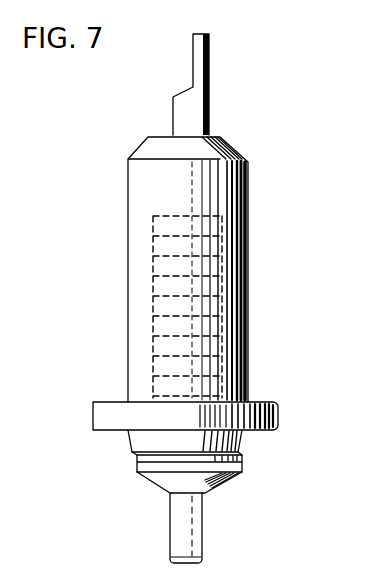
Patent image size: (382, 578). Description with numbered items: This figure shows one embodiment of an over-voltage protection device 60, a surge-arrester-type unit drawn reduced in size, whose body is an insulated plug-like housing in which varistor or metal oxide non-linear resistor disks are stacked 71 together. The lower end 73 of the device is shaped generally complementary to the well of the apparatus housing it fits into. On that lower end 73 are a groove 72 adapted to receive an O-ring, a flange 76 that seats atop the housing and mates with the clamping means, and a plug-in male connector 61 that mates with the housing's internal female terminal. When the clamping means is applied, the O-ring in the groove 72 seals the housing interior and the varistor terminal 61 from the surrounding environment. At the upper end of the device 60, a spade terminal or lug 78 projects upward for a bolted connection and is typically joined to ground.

The over-voltage protection device 60 is at (281, 287).
The plug-in male connector 61 is at (202, 545).
The stacked varistor disks 71 is at (253, 257).
The groove 72 is at (240, 460).
The lower end 73 is at (233, 491).
The flange 76 is at (278, 406).
The spade terminal 78 is at (197, 112).